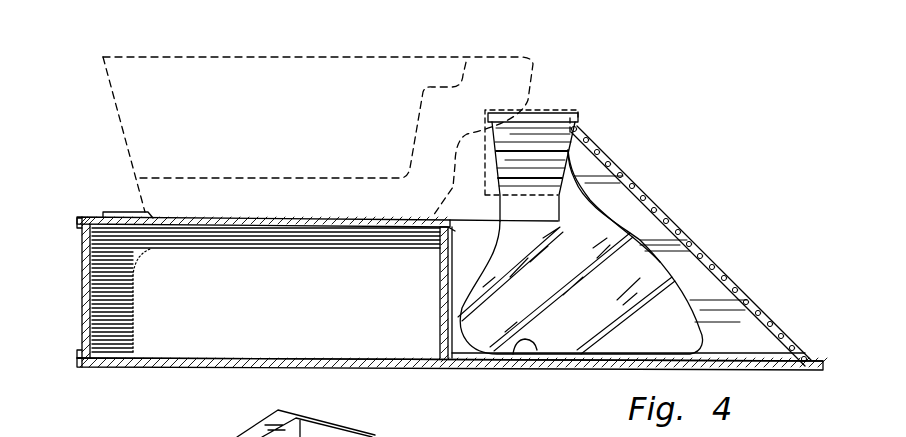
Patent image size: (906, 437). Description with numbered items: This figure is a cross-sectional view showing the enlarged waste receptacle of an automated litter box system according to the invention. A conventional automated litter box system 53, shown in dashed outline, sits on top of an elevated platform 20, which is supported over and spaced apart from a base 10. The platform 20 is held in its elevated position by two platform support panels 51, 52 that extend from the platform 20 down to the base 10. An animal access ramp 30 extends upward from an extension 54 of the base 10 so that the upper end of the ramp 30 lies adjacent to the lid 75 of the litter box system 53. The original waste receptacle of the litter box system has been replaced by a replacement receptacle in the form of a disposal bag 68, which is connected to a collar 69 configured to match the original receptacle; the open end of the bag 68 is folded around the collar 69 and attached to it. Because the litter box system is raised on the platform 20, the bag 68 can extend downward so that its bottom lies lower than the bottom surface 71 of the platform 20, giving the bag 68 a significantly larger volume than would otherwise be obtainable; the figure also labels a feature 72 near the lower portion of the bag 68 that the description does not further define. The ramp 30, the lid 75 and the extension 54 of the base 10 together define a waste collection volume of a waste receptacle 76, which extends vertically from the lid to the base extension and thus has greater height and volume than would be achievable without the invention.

The base 10 is at (173, 367).
The elevated platform 20 is at (123, 216).
The animal access ramp 30 is at (683, 240).
The platform support panel 51 is at (82, 287).
The platform support panel 52 is at (440, 290).
The conventional automated litter box system 53 is at (264, 55).
The extension of base 54 is at (590, 370).
The bag 68 is at (600, 213).
The collar 69 is at (577, 128).
The bottom surface of platform 71 is at (183, 227).
The collection bag 72 is at (516, 352).
The lid 75 is at (560, 107).
The waste receptacle 76 is at (728, 323).